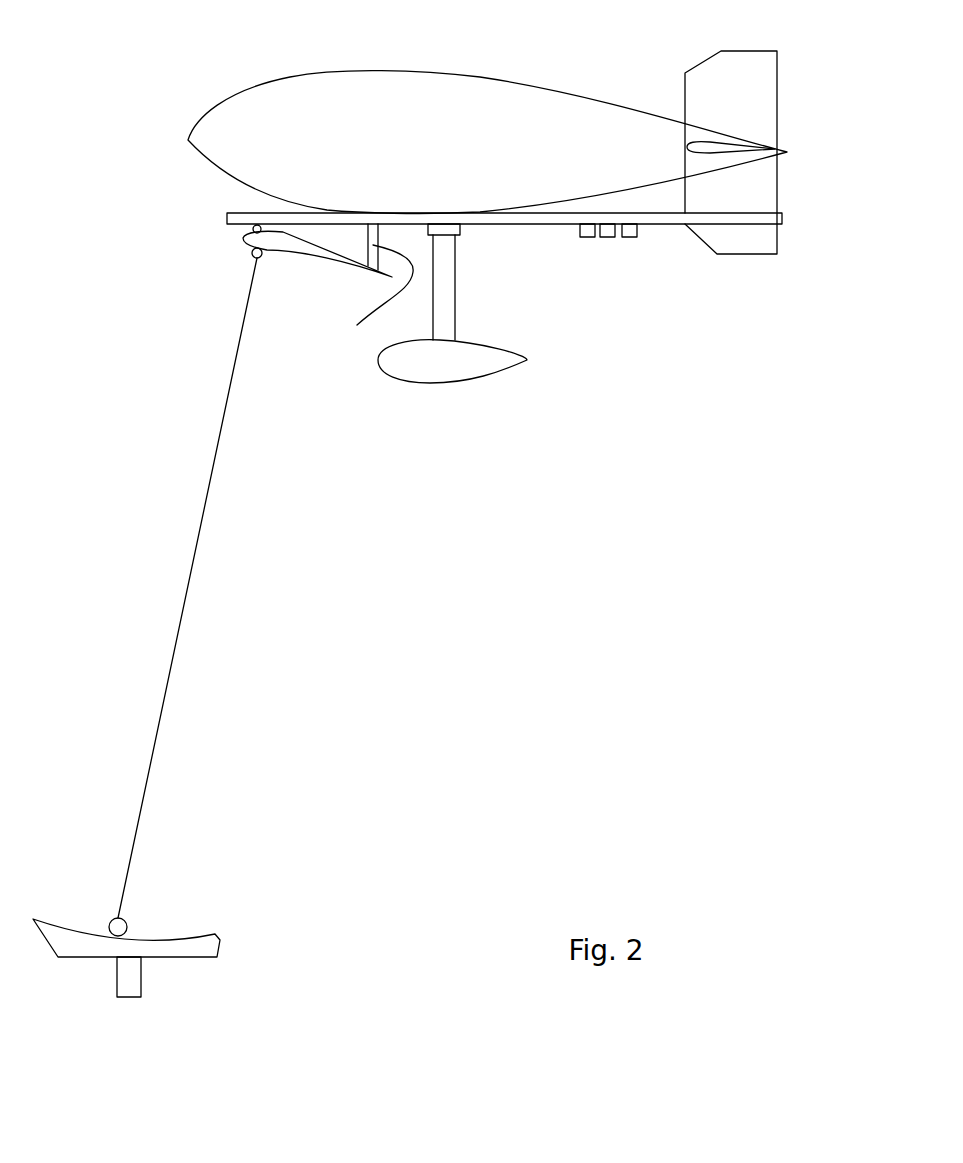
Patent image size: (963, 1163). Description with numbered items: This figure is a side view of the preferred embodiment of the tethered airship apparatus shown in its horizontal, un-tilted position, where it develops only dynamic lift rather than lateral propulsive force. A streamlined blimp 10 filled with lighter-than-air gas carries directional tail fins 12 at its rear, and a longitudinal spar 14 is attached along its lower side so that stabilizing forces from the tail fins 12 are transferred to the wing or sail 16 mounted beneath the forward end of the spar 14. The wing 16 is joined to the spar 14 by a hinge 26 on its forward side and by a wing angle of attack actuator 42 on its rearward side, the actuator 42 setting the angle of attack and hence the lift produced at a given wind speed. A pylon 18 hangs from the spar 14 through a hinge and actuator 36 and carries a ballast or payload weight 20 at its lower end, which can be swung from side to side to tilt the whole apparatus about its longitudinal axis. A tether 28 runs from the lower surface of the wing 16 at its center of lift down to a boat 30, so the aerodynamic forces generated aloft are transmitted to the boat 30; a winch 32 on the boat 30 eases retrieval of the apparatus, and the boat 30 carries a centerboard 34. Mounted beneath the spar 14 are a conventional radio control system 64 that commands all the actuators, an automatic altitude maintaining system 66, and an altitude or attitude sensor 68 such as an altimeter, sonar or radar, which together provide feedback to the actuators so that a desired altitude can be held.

The blimp 10 is at (302, 133).
The directional tail fins 12 is at (757, 96).
The spar 14 is at (665, 215).
The wing or sail 16 is at (283, 242).
The pylon 18 is at (448, 304).
The ballast or payload weight 20 is at (472, 364).
The hinge 26 is at (255, 229).
The tether 28 is at (190, 583).
The boat 30 is at (200, 947).
The winch 32 is at (122, 923).
The centerboard 34 is at (130, 977).
The hinge and actuator 36 is at (447, 229).
The wing angle of attack actuator 42 is at (369, 293).
The conventional radio control system 64 is at (588, 233).
The automatic altitude maintaining system 66 is at (610, 233).
The altitude or attitude sensor 68 is at (632, 233).